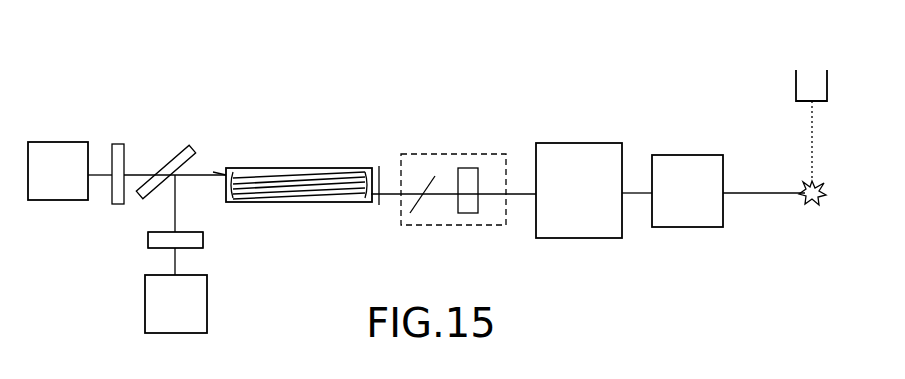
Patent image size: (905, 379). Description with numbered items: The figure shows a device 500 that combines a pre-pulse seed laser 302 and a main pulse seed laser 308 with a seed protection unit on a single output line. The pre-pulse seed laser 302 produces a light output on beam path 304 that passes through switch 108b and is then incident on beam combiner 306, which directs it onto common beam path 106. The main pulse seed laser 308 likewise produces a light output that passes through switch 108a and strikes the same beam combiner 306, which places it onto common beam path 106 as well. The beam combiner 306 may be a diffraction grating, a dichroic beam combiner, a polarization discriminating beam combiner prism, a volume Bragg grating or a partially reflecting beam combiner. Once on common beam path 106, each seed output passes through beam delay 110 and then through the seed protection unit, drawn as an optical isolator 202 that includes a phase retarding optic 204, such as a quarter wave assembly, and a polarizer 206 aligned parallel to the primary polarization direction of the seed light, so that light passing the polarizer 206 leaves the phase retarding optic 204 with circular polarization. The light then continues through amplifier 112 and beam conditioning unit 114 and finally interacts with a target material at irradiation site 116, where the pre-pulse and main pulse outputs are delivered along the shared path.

The device 500 is at (620, 107).
The main pulse seed laser 308 is at (39, 181).
The switch 108a is at (114, 144).
The beam combiner 306 is at (168, 150).
The common beam path 106 is at (213, 174).
The beam delay 110 is at (299, 168).
The optical isolator 202 is at (450, 226).
The polarizer 206 is at (426, 178).
The phase retarding optic 204 is at (467, 168).
The amplifier 112 is at (558, 199).
The beam conditioning unit 114 is at (667, 199).
The irradiation site 116 is at (811, 204).
The beam path 304 is at (166, 252).
The switch 108b is at (204, 240).
The pre-pulse seed laser 302 is at (156, 312).